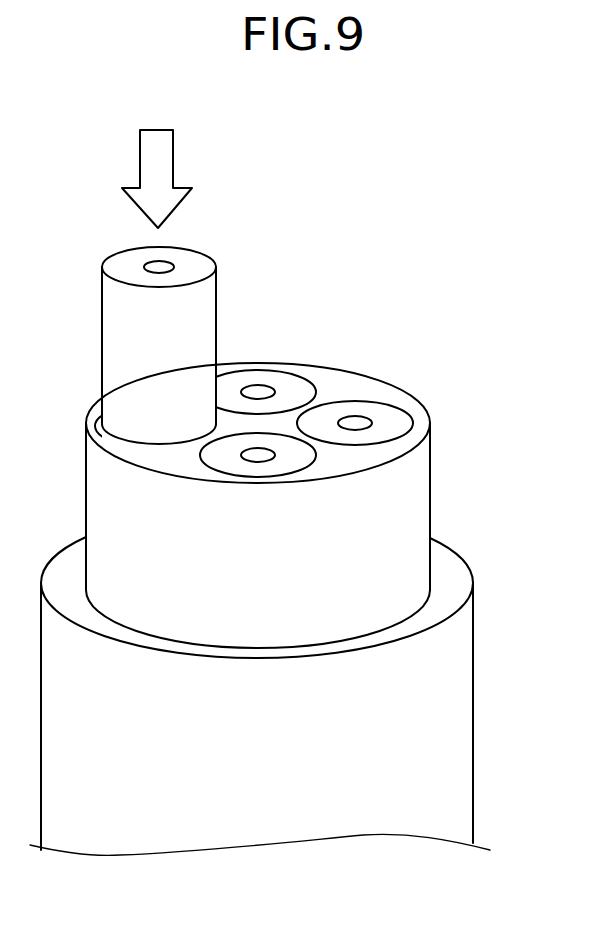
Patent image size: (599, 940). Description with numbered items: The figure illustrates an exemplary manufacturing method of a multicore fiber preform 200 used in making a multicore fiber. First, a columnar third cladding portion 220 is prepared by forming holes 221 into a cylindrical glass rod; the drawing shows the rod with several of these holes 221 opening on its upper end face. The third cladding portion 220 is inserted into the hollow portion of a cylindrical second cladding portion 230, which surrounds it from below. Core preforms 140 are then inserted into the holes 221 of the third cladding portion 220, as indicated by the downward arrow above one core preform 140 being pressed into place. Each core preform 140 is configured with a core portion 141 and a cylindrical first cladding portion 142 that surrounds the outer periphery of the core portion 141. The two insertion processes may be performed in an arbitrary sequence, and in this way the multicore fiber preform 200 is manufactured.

The core preform 140 is at (293, 210).
The core portion 141 is at (161, 268).
The first cladding portion 142 is at (200, 264).
The multicore fiber preform 200 is at (529, 308).
The third cladding portion 220 is at (378, 370).
The holes 221 is at (117, 430).
The second cladding portion 230 is at (455, 577).